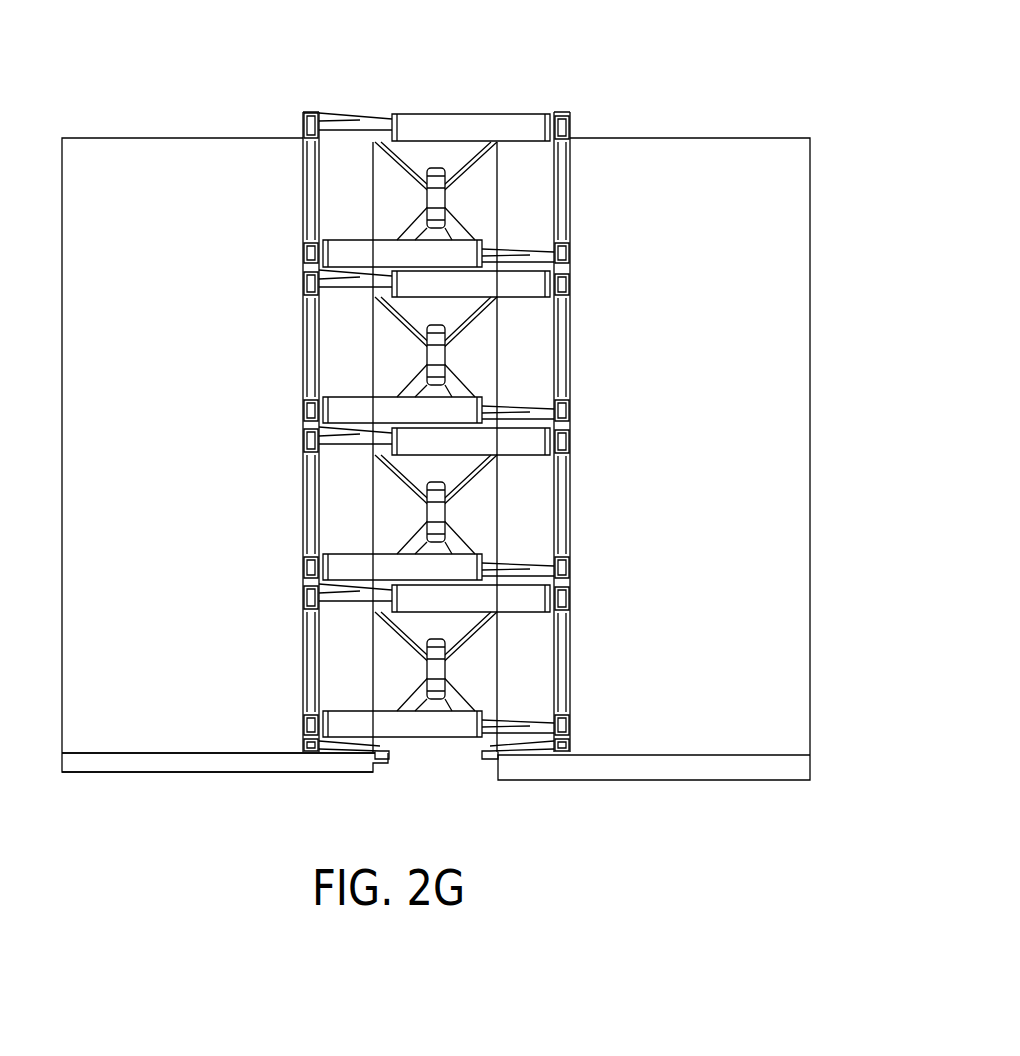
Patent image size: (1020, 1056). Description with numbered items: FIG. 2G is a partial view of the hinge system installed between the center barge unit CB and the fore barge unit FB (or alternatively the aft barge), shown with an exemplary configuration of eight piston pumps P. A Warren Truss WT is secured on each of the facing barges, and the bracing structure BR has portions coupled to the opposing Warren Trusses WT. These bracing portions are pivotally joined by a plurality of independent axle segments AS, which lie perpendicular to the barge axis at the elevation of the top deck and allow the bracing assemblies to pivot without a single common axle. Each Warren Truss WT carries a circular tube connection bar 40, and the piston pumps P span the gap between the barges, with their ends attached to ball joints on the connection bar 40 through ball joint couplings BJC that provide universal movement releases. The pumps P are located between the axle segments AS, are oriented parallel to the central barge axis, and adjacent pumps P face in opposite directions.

The circular tube connection bar 40 is at (299, 175).
The ball joint coupling BJC is at (302, 110).
The piston pump P is at (458, 110).
The axle segment AS is at (433, 160).
The bracing structure BR is at (466, 231).
The Warren Truss WT is at (455, 430).
The center barge unit CB is at (785, 397).
The fore barge unit FB is at (163, 732).